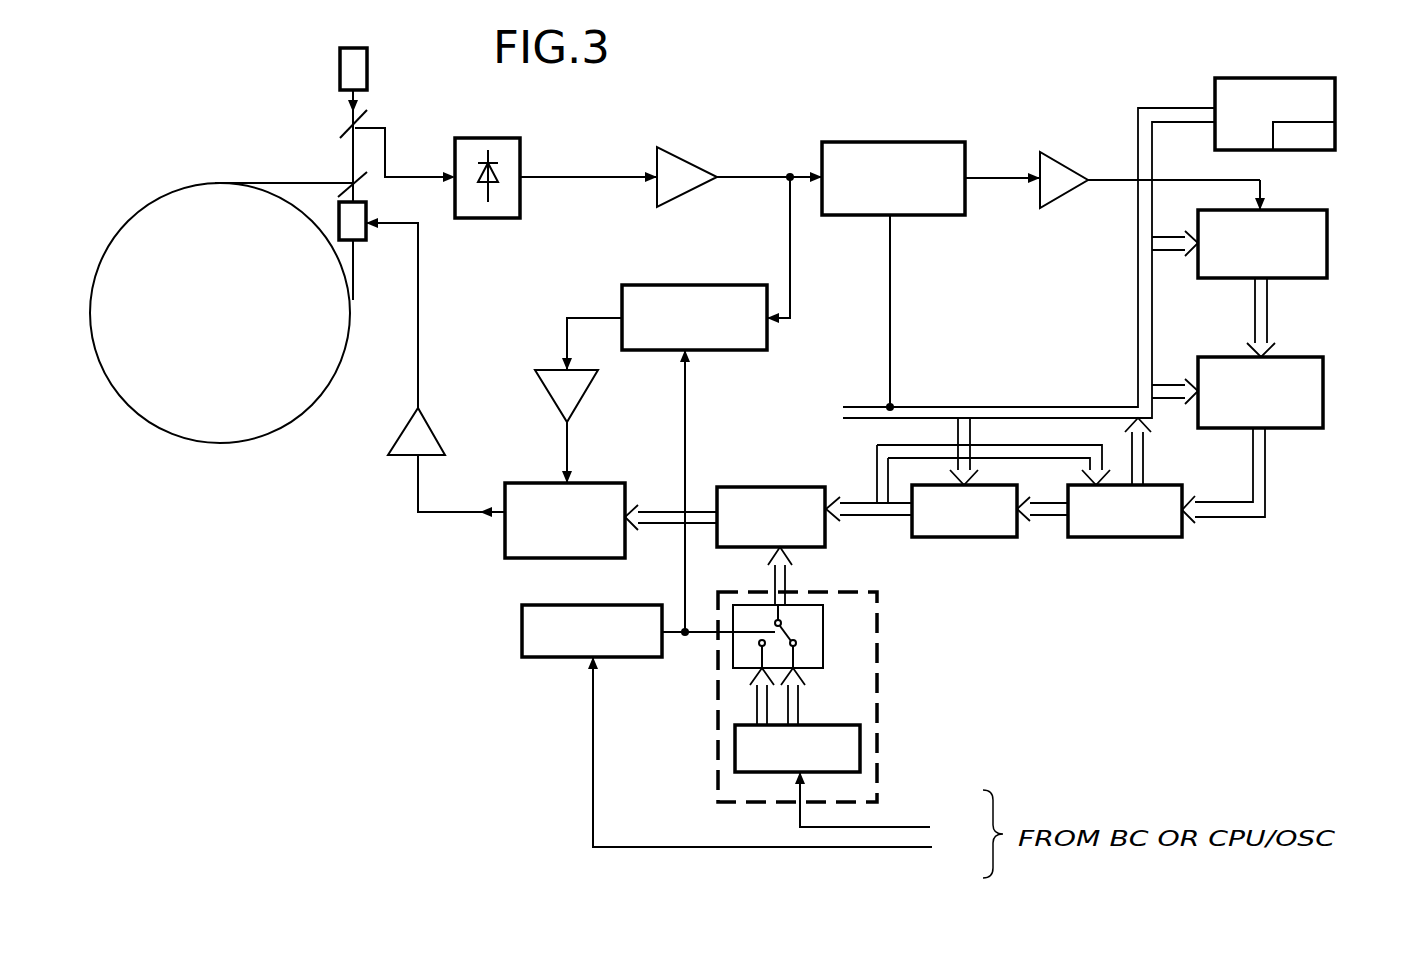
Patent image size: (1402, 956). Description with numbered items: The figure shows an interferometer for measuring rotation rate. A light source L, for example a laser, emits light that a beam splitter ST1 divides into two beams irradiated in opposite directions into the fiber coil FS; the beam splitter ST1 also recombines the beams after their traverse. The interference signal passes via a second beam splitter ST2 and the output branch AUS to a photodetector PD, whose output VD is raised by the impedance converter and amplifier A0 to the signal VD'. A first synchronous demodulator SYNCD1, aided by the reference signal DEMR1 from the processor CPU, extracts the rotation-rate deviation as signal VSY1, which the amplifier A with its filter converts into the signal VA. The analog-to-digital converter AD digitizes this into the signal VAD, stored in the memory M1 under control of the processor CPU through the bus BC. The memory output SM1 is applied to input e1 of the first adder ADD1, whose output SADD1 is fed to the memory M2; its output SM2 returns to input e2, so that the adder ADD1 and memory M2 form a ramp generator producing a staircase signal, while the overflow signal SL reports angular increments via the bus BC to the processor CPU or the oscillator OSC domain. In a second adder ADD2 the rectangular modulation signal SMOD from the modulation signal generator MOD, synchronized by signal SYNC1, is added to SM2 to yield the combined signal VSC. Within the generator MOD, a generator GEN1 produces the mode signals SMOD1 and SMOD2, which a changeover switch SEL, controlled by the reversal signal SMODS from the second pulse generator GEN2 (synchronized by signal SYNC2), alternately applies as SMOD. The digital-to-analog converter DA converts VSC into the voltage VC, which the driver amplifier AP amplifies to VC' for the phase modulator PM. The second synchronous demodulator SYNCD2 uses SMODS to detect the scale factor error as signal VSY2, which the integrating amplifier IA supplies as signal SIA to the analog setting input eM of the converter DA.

The light source L is at (367, 66).
The second beam splitter ST2 is at (345, 126).
The beam splitter ST1 is at (345, 182).
The phase modulator PM is at (360, 212).
The fiber coil FS is at (300, 433).
The output branch AUS is at (427, 175).
The photodetector PD is at (485, 218).
The photodetector output signal VD is at (579, 153).
The impedance converter and amplifier A0 is at (690, 172).
The amplified photodetector signal VD' is at (767, 156).
The first synchronous demodulator SYNCD1 is at (905, 215).
The first demodulator output signal VSY1 is at (990, 176).
The demodulation reference signal DEMR1 is at (892, 330).
The amplifier A is at (1070, 175).
The amplifier output signal VA is at (1233, 178).
The processor CPU is at (1275, 114).
The oscillator OSC is at (1304, 136).
The bus BC is at (1188, 120).
The analog-to-digital converter AD is at (1327, 222).
The digital output signal VAD is at (1255, 335).
The first memory M1 is at (1323, 375).
The overflow output signal SL is at (1143, 458).
The first adder input e1 is at (1182, 500).
The first memory output signal SM1 is at (1265, 475).
The first adder ADD1 is at (1130, 537).
The first adder output signal SADD1 is at (1043, 517).
The second memory M2 is at (950, 537).
The second adder input e2 is at (1092, 476).
The ramp signal SM2 is at (855, 517).
The second adder ADD2 is at (780, 487).
The combined modulation signal VSC is at (697, 510).
The digital-to-analog converter DA is at (520, 558).
The analog setting input eM is at (564, 478).
The integrating amplifier IA is at (578, 384).
The integrating amplifier output signal SIA is at (568, 445).
The second demodulator output signal VSY2 is at (592, 286).
The second synchronous demodulator SYNCD2 is at (698, 262).
The analog control voltage VC is at (461, 486).
The amplified control voltage VC' is at (444, 327).
The driver amplifier AP is at (408, 432).
The modulation deviation reversal signal SMODS is at (687, 407).
The modulation signal SMOD is at (780, 580).
The modulation signal generator MOD is at (877, 608).
The changeover switch SEL is at (823, 642).
The generator GEN1 is at (860, 752).
The first modulation signal SMOD1 is at (800, 705).
The second modulation signal SMOD2 is at (760, 705).
The second pulse generator GEN2 is at (522, 632).
The first synchronizing signal SYNC1 is at (880, 799).
The second synchronizing signal SYNC2 is at (777, 769).